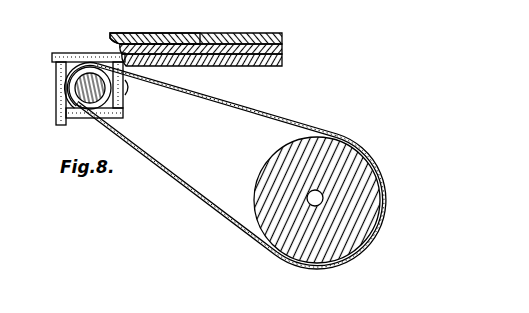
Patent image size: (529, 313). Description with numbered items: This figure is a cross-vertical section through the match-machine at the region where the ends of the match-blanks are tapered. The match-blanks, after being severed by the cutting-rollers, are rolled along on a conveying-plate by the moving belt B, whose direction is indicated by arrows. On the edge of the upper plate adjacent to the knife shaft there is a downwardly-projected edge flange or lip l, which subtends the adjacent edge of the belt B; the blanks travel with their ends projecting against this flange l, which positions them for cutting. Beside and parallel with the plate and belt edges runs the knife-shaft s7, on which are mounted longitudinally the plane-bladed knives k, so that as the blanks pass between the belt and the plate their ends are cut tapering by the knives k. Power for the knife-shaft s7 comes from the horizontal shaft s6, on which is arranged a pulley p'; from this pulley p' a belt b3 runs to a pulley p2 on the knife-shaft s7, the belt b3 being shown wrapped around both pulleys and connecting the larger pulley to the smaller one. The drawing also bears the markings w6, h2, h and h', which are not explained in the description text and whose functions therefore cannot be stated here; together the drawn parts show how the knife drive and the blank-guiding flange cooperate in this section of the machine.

The belt B is at (255, 37).
The pulley p' is at (198, 26).
The pulley p2 is at (284, 56).
The edge flange l is at (110, 40).
The knives k is at (41, 86).
The frame bar w6 is at (35, 105).
The small pulley h2 is at (139, 95).
The knife-shaft s7 is at (72, 96).
The pulley h is at (101, 99).
The belt b3 is at (223, 106).
The large pulley h' is at (303, 200).
The horizontal shaft s6 is at (307, 194).